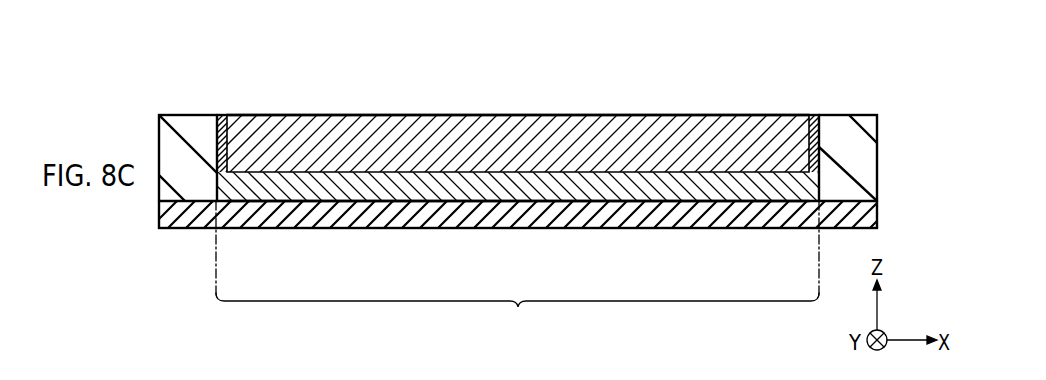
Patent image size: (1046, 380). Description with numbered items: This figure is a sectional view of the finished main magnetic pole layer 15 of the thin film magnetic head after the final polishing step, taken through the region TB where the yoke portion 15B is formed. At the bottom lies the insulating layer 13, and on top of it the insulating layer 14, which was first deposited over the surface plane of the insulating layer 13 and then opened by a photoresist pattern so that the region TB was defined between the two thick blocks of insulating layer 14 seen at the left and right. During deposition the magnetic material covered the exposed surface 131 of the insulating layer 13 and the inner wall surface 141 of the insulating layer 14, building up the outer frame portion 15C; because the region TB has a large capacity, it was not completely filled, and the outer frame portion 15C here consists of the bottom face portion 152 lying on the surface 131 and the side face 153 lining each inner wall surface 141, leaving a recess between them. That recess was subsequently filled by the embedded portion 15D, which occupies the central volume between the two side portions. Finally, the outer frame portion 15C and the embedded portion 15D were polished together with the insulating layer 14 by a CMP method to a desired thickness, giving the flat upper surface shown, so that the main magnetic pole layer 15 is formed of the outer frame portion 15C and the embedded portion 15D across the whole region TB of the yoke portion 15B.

The main magnetic pole layer 15 is at (518, 90).
The yoke portion 15B is at (517, 316).
The outer frame portion 15C is at (223, 116).
The embedded portion 15D is at (450, 116).
The insulating layer 14 is at (867, 143).
The insulating layer 13 is at (867, 213).
The inner wall surface 141 is at (237, 133).
The surface 131 is at (517, 200).
The bottom face portion 152 is at (544, 200).
The side face 153 is at (240, 213).